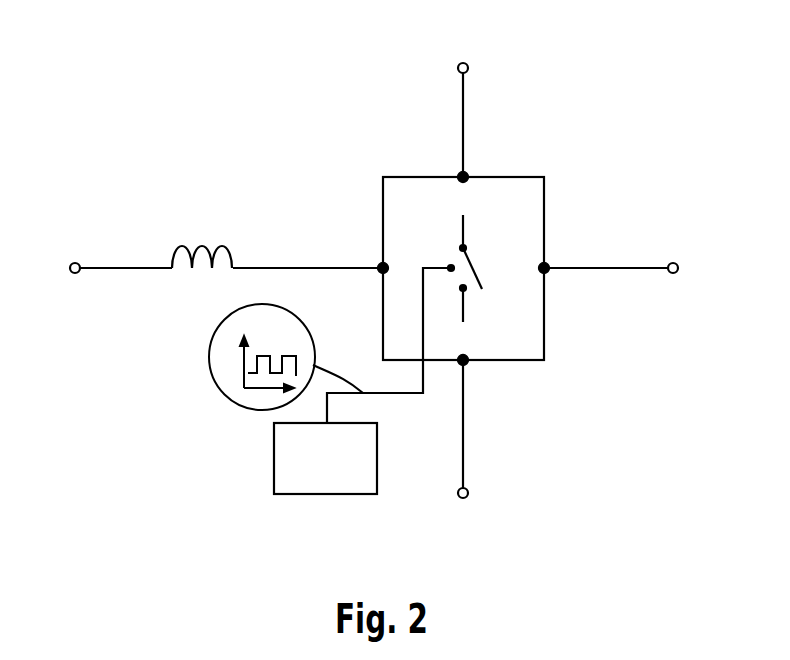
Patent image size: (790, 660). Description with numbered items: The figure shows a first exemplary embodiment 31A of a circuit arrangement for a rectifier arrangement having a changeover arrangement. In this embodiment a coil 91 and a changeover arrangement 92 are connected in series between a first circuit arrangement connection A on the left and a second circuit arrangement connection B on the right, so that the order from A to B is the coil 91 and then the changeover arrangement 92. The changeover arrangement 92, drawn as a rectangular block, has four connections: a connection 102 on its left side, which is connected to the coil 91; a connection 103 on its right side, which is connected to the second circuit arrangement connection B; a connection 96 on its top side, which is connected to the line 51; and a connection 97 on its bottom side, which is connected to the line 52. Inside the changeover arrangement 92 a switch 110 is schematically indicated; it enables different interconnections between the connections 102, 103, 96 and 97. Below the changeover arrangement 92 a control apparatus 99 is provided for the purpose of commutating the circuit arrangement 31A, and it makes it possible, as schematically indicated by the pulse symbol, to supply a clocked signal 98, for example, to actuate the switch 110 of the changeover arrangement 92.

The first exemplary embodiment of the circuit arrangement 31A is at (297, 127).
The line 51 is at (468, 66).
The line 52 is at (467, 498).
The coil 91 is at (214, 246).
The changeover arrangement 92 is at (528, 176).
The connection 96 is at (466, 174).
The connection 97 is at (466, 364).
The clocked signal 98 is at (208, 357).
The control apparatus 99 is at (312, 495).
The connection 102 is at (382, 272).
The connection 103 is at (546, 272).
The switch 110 is at (457, 258).